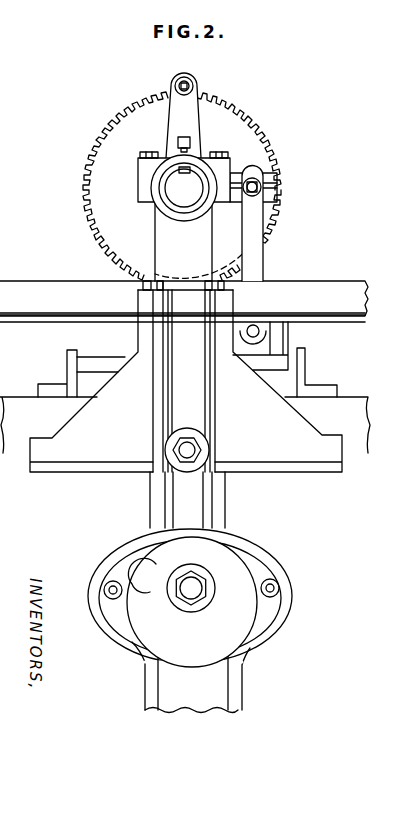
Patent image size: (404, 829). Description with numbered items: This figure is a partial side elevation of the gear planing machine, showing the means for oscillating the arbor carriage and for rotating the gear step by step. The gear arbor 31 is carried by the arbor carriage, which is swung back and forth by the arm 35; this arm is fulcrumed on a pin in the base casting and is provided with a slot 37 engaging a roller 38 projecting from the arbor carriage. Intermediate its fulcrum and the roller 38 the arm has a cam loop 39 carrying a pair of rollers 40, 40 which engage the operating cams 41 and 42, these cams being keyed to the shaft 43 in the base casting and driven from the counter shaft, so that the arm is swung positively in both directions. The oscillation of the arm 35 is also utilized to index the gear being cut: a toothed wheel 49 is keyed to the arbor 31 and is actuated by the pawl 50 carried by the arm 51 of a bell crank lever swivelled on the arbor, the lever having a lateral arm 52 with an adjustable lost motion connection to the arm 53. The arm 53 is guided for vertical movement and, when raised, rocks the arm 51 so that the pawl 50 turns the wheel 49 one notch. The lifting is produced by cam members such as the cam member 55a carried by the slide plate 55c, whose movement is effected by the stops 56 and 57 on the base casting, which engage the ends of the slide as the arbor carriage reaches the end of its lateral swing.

The arbor 31 is at (173, 185).
The arm 35 is at (158, 407).
The slot 37 is at (192, 407).
The roller 38 is at (202, 440).
The cam loop 39 is at (278, 548).
The rollers 40 is at (107, 590).
The operating cam 41 is at (140, 567).
The operating cam 42 is at (253, 628).
The shaft 43 is at (188, 590).
The toothed wheel 49 is at (249, 149).
The pawl 50 is at (173, 97).
The arm of bell crank lever 51 is at (188, 115).
The lateral arm 52 is at (270, 198).
The arm 53 is at (264, 262).
The cam member 55a is at (282, 337).
The slide plate 55c is at (113, 355).
The stop 56 is at (67, 372).
The stop 57 is at (307, 373).